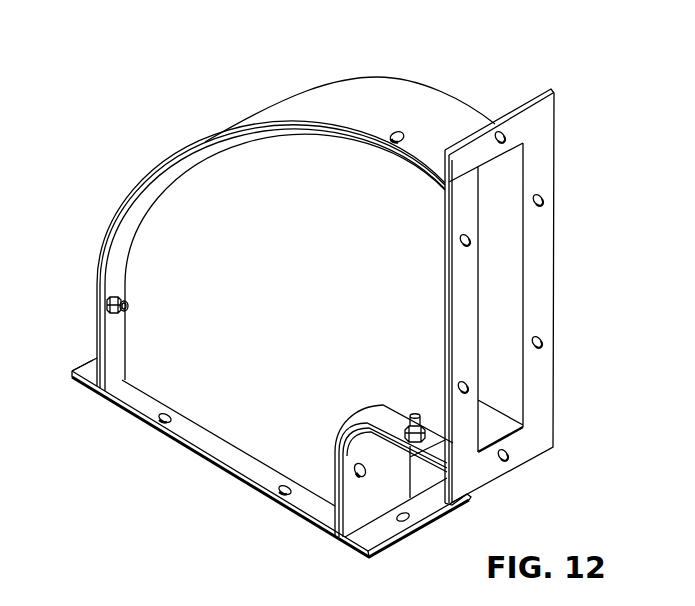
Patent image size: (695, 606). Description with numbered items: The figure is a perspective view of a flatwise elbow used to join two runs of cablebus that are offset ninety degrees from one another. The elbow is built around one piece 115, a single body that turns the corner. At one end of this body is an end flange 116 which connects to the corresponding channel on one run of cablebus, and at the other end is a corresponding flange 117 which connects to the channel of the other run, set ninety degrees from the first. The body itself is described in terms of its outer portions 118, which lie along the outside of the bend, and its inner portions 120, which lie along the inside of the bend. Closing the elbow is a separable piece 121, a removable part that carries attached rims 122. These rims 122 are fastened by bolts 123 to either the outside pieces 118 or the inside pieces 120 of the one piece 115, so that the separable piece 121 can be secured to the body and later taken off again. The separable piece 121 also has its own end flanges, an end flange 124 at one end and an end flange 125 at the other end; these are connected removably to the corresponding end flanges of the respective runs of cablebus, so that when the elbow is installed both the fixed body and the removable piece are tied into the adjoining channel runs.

The one piece 115 is at (424, 117).
The end flange 116 is at (545, 292).
The corresponding flange 117 is at (91, 370).
The outer portions 118 is at (305, 112).
The inner portions 120 is at (392, 415).
The separable piece 121 is at (292, 295).
The attached rims 122 is at (129, 243).
The bolts 123 is at (104, 297).
The end flange 124 is at (462, 283).
The end flange 125 is at (246, 468).